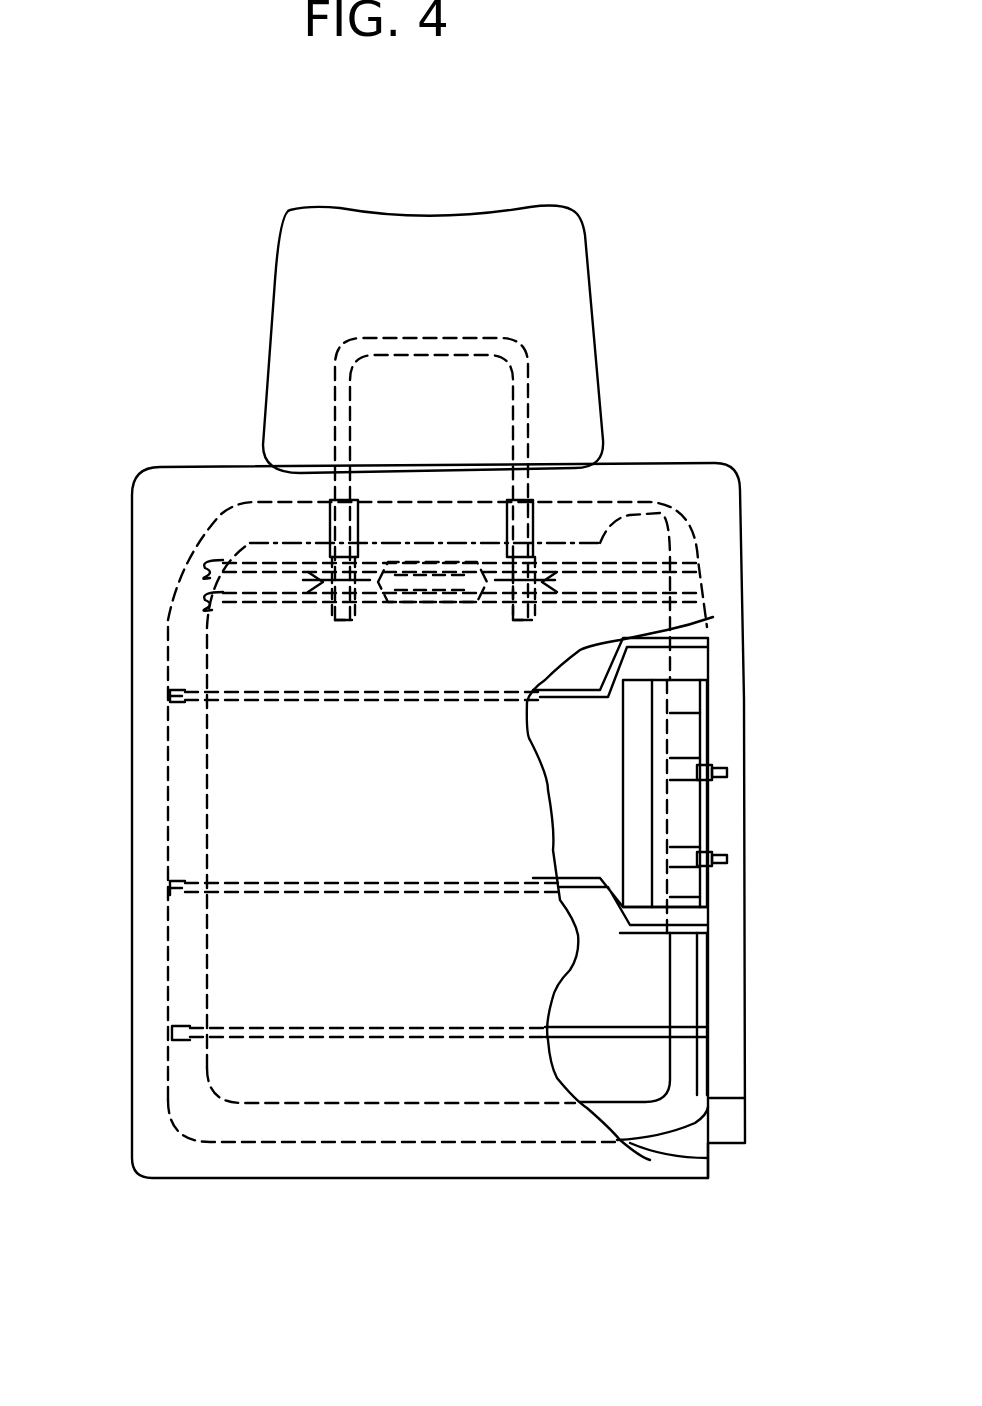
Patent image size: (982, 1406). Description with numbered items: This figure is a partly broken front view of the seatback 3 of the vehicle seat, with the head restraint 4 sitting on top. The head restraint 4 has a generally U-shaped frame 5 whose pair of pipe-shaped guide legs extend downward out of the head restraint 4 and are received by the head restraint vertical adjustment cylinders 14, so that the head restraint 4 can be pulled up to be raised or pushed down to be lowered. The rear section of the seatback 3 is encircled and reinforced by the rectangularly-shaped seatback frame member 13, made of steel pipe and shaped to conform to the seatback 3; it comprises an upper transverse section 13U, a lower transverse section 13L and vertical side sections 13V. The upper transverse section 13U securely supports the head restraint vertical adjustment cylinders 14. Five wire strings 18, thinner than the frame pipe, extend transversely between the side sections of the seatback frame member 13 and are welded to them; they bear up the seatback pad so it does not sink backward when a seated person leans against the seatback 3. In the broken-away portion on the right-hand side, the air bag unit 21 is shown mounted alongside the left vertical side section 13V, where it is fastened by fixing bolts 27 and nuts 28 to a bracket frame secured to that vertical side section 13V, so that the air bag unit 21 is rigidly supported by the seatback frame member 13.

The seatback 3 is at (188, 1183).
The head restraint 4 is at (588, 242).
The U-shaped frame 5 is at (533, 386).
The seatback frame member 13 is at (563, 1140).
The upper transverse section 13U is at (730, 511).
The lower transverse section 13L is at (393, 1122).
The vertical side section 13V is at (683, 992).
The head restraint vertical adjustment cylinders 14 is at (310, 520).
The wire strings 18 is at (210, 527).
The air bag unit 21 is at (657, 692).
The fixing bolts 27 is at (718, 858).
The nuts 28 is at (712, 772).